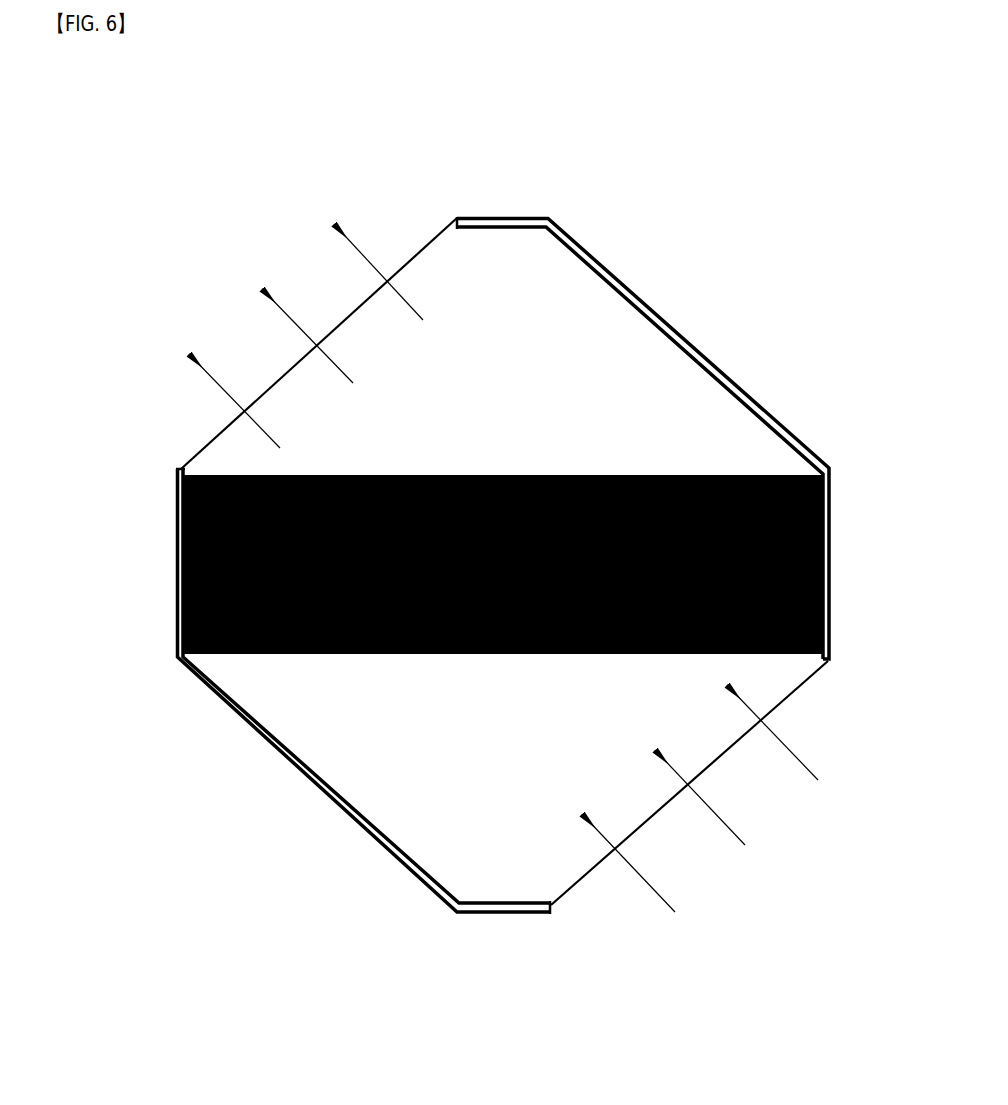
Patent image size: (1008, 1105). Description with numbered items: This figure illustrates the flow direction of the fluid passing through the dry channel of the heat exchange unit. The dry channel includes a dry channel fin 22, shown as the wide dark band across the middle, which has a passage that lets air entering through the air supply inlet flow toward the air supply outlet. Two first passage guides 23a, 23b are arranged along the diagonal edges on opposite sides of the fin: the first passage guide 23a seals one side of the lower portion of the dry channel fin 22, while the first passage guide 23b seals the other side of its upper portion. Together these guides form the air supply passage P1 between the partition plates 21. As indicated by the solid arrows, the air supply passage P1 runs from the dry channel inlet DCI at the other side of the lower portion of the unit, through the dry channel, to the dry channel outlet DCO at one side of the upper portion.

The partition plate 21 is at (420, 808).
The dry channel fin 22 is at (678, 454).
The first passage guide 23a is at (297, 780).
The first passage guide 23b is at (622, 278).
The dry channel outlet DCO is at (305, 336).
The dry channel inlet DCI is at (702, 798).
The air supply passage P1 is at (509, 564).